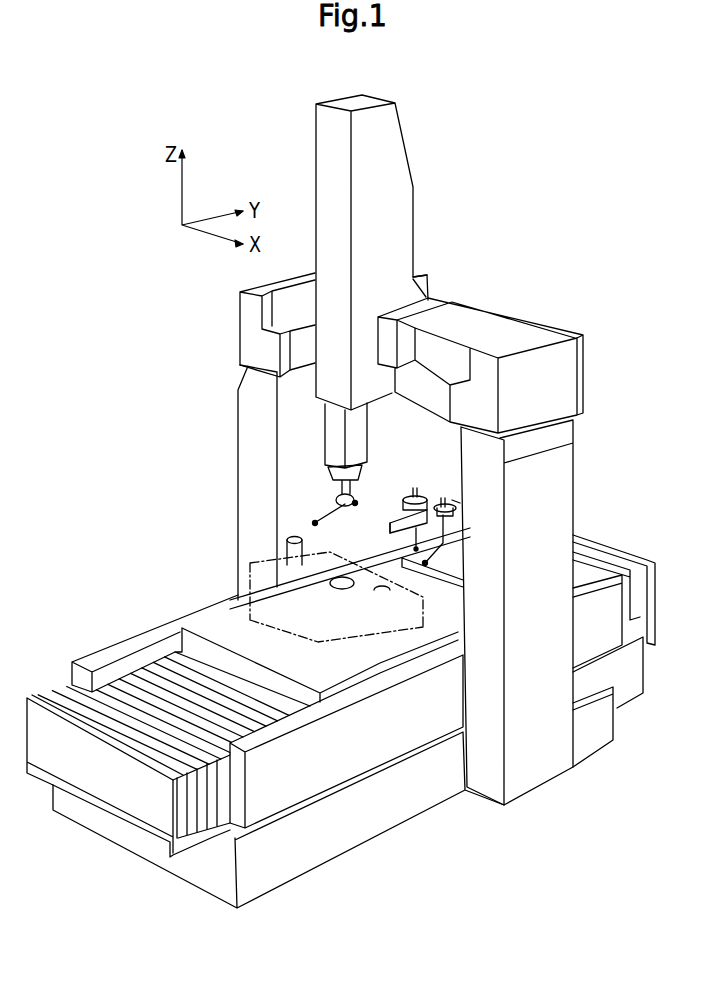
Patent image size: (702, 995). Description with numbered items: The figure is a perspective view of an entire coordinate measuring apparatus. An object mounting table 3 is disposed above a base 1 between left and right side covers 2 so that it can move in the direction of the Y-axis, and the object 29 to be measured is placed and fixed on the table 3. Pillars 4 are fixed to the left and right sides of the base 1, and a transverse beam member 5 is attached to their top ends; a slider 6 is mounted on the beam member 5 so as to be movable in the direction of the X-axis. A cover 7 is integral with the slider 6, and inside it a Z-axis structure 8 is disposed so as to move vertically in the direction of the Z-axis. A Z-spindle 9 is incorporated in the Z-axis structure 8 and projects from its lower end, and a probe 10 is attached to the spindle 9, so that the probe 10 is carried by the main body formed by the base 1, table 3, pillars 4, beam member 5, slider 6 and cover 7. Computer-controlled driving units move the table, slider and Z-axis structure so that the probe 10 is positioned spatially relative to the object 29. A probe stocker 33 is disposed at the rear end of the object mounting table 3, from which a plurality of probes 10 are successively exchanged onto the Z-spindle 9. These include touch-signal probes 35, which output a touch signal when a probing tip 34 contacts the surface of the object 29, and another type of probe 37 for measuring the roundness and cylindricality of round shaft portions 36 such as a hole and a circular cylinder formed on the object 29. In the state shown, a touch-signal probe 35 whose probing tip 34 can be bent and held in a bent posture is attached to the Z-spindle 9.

The base 1 is at (258, 890).
The side covers 2 is at (132, 643).
The object mounting table 3 is at (193, 621).
The pillars 4 is at (247, 440).
The transverse beam member 5 is at (483, 337).
The slider 6 is at (433, 298).
The cover 7 is at (397, 160).
The Z-axis structure 8 is at (328, 434).
The Z-spindle 9 is at (330, 470).
The probe 10 is at (340, 491).
The object to be measured 29 is at (250, 565).
The probe stocker 33 is at (456, 585).
The probing tip 34 is at (333, 516).
The touch-signal probes 35 is at (357, 503).
The round shaft portions 36 is at (295, 570).
The probe for measuring roundness 37 is at (414, 487).